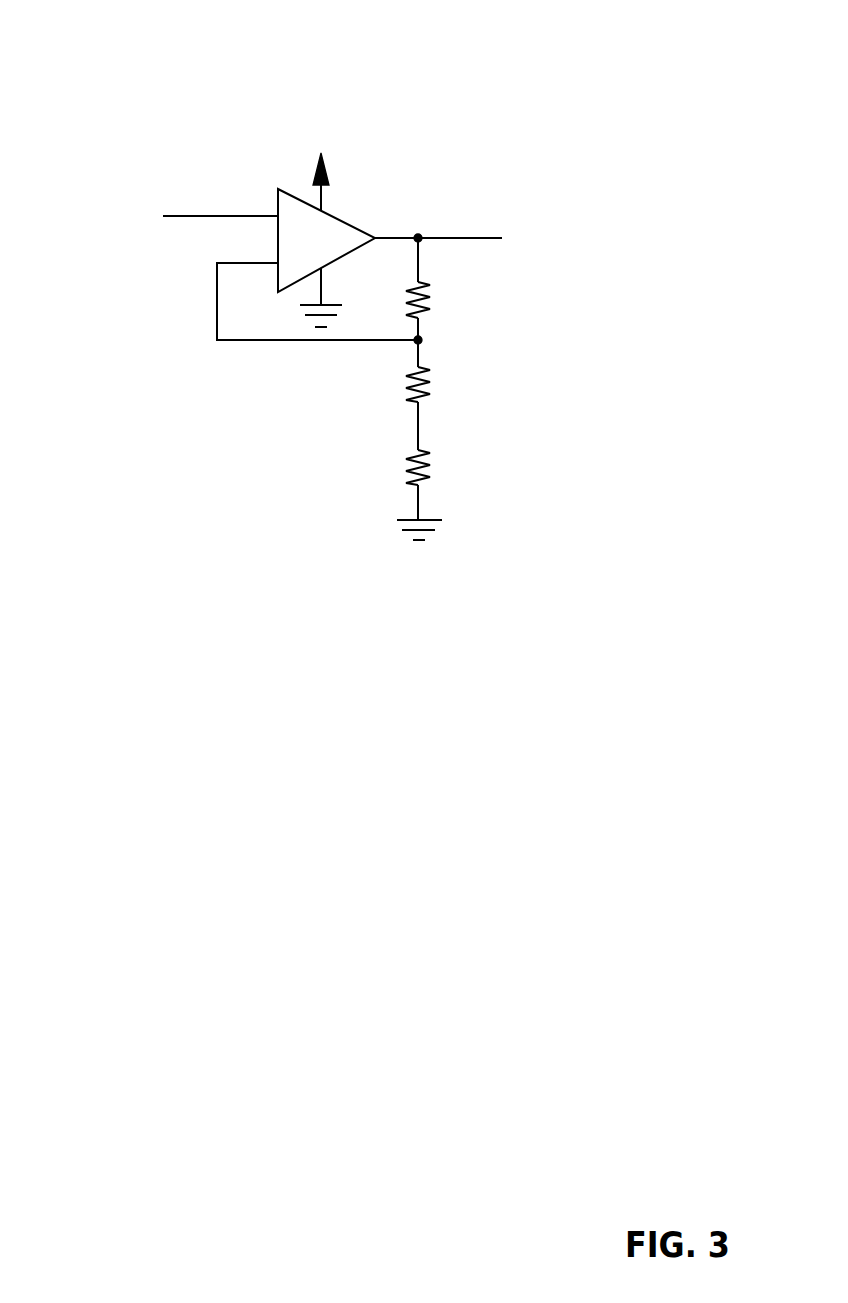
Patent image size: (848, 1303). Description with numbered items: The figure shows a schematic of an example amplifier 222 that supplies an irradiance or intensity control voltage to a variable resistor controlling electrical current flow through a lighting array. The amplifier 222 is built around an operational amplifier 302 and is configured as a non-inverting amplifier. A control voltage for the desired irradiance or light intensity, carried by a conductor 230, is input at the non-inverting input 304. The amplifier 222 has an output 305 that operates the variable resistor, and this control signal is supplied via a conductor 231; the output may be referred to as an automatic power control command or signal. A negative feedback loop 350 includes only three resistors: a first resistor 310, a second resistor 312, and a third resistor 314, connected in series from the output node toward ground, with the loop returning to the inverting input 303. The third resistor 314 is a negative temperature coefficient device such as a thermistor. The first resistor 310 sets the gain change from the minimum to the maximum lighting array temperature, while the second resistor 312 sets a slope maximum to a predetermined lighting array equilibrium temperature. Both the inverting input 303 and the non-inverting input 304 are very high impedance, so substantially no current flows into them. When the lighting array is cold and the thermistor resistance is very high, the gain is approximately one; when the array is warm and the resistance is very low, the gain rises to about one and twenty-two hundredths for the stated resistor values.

The amplifier 222 is at (158, 41).
The conductor 230 is at (197, 215).
The conductor 231 is at (455, 242).
The operational amplifier 302 is at (342, 217).
The inverting input 303 is at (277, 267).
The non-inverting input 304 is at (277, 214).
The output 305 is at (373, 242).
The first resistor (R1) 310 is at (423, 317).
The second resistor (R2) 312 is at (425, 402).
The third resistor (RT) 314 is at (425, 485).
The negative feedback loop 350 is at (380, 389).